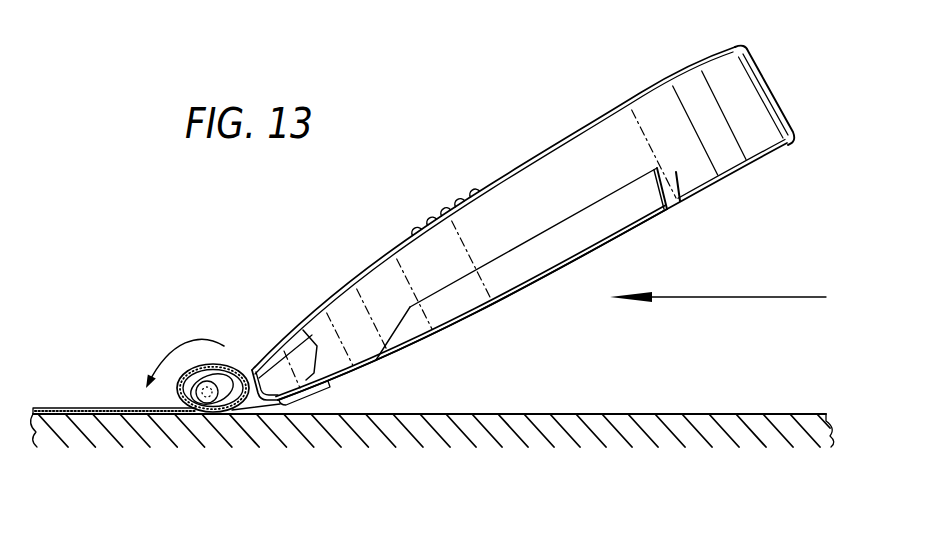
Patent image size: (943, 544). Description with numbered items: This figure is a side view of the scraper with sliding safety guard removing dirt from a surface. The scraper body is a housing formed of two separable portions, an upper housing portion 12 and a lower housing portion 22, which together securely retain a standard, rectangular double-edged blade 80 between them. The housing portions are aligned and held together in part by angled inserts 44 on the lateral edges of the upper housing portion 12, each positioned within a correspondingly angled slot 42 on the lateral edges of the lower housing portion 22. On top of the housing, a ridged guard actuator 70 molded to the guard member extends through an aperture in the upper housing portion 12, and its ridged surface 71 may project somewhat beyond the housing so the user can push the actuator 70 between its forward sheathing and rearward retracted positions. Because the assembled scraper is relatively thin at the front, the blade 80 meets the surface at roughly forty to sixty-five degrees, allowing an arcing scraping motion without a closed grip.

The upper housing portion 12 is at (298, 325).
The lower housing portion 22 is at (417, 332).
The angled slot 42 is at (274, 405).
The angled insert 44 is at (338, 362).
The guard actuator 70 is at (441, 207).
The ridged surface 71 is at (477, 190).
The double-edged blade 80 is at (236, 410).